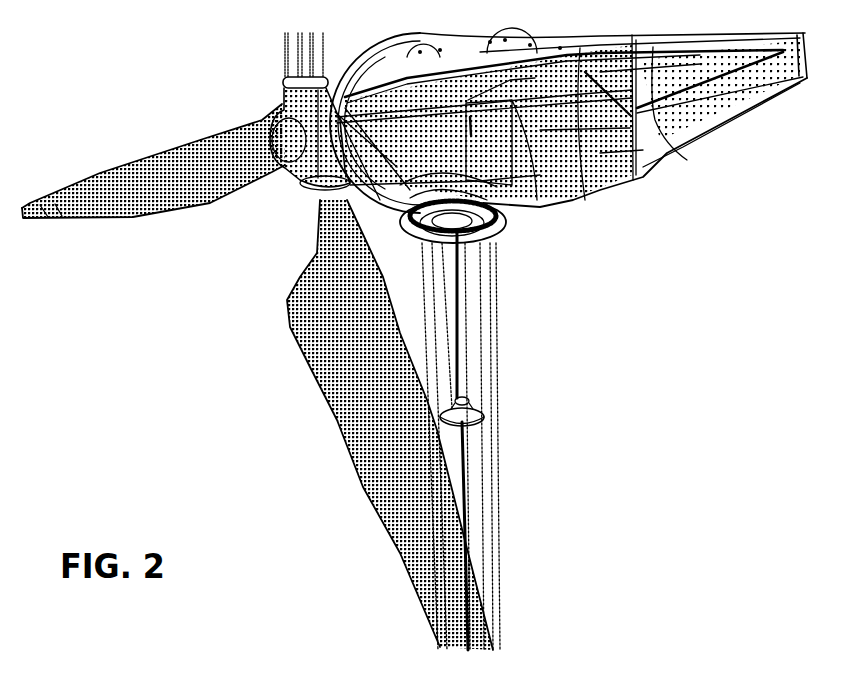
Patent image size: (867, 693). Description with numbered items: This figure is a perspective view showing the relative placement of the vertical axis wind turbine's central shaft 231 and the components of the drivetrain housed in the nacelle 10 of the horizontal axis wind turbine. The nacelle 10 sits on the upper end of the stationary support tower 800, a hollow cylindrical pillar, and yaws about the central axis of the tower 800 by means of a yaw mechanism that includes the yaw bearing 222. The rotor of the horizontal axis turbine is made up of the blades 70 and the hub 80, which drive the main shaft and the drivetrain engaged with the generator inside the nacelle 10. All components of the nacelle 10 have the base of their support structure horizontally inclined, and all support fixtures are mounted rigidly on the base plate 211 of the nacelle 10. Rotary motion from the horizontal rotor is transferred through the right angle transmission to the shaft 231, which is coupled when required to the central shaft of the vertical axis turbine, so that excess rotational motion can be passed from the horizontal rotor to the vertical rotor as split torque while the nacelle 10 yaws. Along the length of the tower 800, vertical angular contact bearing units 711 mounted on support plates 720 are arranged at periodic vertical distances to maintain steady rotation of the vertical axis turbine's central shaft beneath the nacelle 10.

The nacelle 10 is at (670, 160).
The blades 70 is at (317, 387).
The hub 80 is at (290, 172).
The base plate 211 is at (573, 197).
The yaw bearing 222 is at (470, 238).
The shaft 231 is at (462, 250).
The vertical angular contact bearing units 711 is at (470, 401).
The support plates 720 is at (485, 417).
The stationary support tower 800 is at (500, 620).